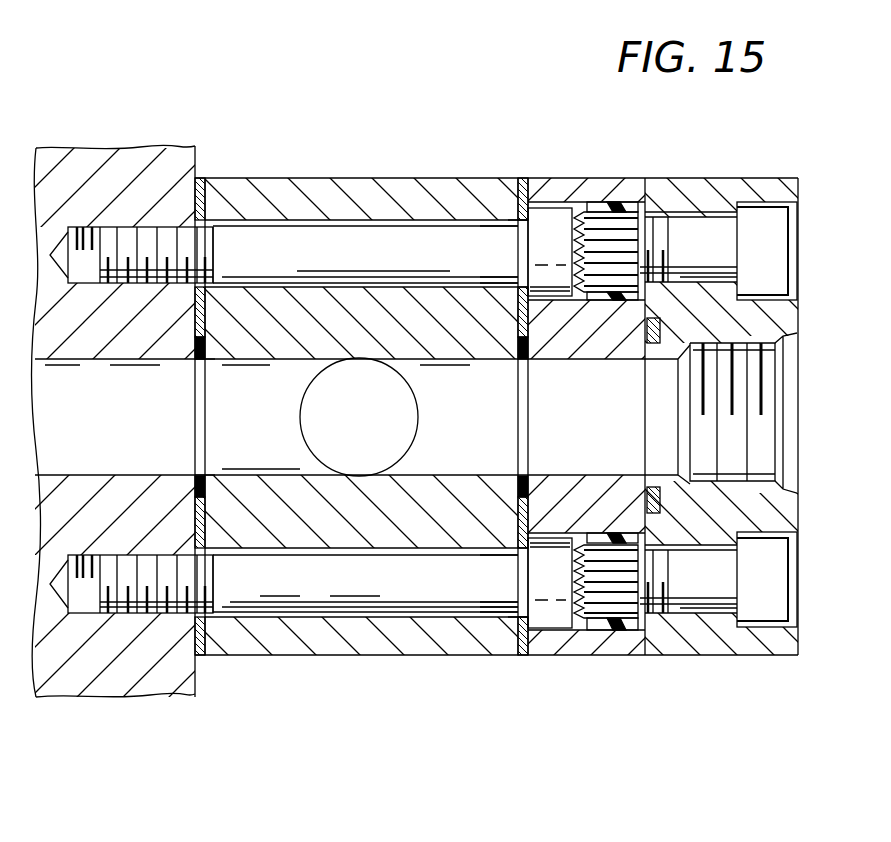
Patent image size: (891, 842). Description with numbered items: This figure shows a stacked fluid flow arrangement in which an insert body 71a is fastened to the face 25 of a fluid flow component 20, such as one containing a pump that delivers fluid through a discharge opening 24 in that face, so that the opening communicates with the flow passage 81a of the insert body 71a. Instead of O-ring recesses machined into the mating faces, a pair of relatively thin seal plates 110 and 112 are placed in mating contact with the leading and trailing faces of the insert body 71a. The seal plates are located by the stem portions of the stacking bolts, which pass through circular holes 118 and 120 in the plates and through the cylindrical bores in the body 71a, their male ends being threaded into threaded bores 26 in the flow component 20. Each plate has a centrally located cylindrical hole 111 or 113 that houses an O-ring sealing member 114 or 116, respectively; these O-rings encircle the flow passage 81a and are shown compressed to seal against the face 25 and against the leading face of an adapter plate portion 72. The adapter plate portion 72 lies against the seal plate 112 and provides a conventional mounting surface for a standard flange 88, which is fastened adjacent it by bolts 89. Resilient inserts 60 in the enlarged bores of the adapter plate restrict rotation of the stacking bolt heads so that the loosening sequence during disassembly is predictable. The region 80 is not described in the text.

The fluid flow component 20 is at (137, 160).
The face 25 is at (195, 677).
The discharge opening 24 is at (68, 362).
The threaded bores 26 is at (125, 230).
The insert body 71a is at (305, 178).
The flow passage 81a is at (245, 362).
The seal plate 110 is at (205, 182).
The cylindrical hole 111 is at (195, 335).
The O-ring sealing member 114 is at (195, 365).
The circular holes 118 is at (215, 232).
The circular holes 120 is at (522, 276).
The seal plate 112 is at (519, 178).
The cylindrical hole 113 is at (518, 327).
The O-ring sealing member 116 is at (518, 347).
The piston end 80 is at (585, 362).
The adapter plate portion 72 is at (592, 178).
The resilient inserts 60 is at (607, 205).
The standard flange 88 is at (703, 188).
The bolts 89 is at (777, 235).